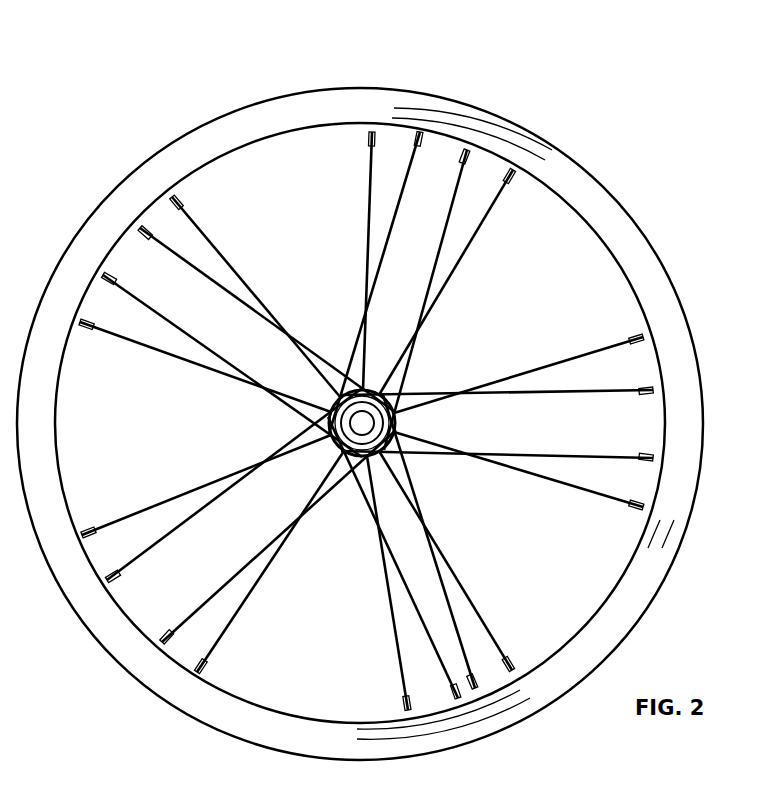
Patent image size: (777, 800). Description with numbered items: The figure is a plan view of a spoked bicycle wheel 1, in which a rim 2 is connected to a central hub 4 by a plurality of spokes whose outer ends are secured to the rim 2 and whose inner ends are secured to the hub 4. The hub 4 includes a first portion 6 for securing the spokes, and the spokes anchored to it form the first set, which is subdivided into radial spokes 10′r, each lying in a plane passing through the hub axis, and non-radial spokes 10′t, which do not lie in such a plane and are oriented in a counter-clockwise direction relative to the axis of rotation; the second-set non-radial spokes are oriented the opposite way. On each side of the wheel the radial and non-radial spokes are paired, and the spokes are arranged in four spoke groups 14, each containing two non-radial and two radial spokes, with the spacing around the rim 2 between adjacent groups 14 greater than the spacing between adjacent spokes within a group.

The spoked bicycle wheel 1 is at (583, 121).
The rim 2 is at (625, 205).
The hub 4 is at (410, 374).
The first portion of the hub for securing the spokes 6 is at (358, 460).
The four spoke grouping 14 is at (532, 183).
The radial spokes of the first set 10′r is at (368, 200).
The non-radial spokes of the first set 10′t is at (446, 225).